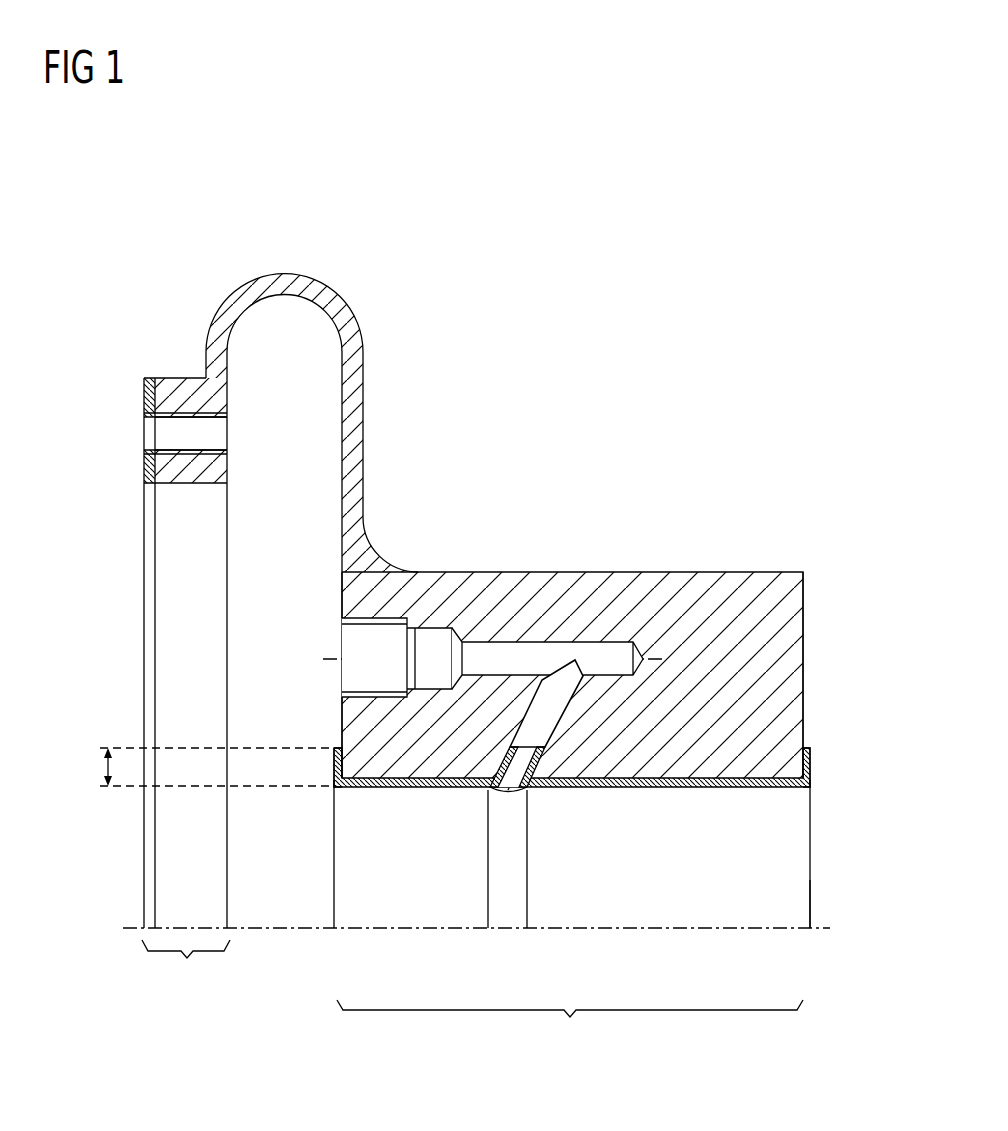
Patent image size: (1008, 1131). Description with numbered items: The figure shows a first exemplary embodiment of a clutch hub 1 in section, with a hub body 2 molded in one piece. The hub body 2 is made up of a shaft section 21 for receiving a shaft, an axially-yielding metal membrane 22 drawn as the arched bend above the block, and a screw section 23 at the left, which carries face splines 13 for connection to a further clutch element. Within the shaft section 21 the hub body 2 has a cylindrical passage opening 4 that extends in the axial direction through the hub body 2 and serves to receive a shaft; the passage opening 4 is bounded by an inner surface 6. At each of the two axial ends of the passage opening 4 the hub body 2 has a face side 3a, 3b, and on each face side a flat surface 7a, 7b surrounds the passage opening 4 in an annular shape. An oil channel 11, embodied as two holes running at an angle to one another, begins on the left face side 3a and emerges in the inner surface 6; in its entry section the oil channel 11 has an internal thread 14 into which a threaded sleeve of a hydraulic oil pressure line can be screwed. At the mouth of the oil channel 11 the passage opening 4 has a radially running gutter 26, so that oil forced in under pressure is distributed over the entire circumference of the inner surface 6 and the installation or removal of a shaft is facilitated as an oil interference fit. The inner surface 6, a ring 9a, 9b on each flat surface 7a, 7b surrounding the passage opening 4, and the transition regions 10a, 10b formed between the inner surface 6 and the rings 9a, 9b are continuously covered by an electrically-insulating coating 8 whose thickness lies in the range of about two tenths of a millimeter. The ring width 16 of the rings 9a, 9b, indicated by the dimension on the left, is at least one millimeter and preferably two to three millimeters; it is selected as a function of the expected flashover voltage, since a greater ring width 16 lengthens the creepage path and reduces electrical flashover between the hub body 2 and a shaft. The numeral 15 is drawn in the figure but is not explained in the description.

The clutch hub 1 is at (210, 184).
The hub body 2 is at (573, 586).
The face side 3a is at (332, 590).
The face side 3b is at (813, 627).
The passage opening 4 is at (646, 910).
The inner surface 6 is at (810, 903).
The flat surface 7a is at (342, 722).
The flat surface 7b is at (803, 700).
The electrically-insulating coating 8 is at (422, 788).
The ring 9a is at (334, 768).
The ring 9b is at (810, 758).
The transition region 10a is at (334, 787).
The transition region 10b is at (810, 785).
The oil channel 11 is at (526, 652).
The face splines 13 is at (152, 397).
The internal thread 14 is at (373, 623).
The groove 15 is at (168, 434).
The ring width 16 is at (105, 767).
The shaft section 21 is at (570, 1023).
The metal membrane 22 is at (290, 278).
The screw section 23 is at (186, 964).
The gutter 26 is at (509, 918).